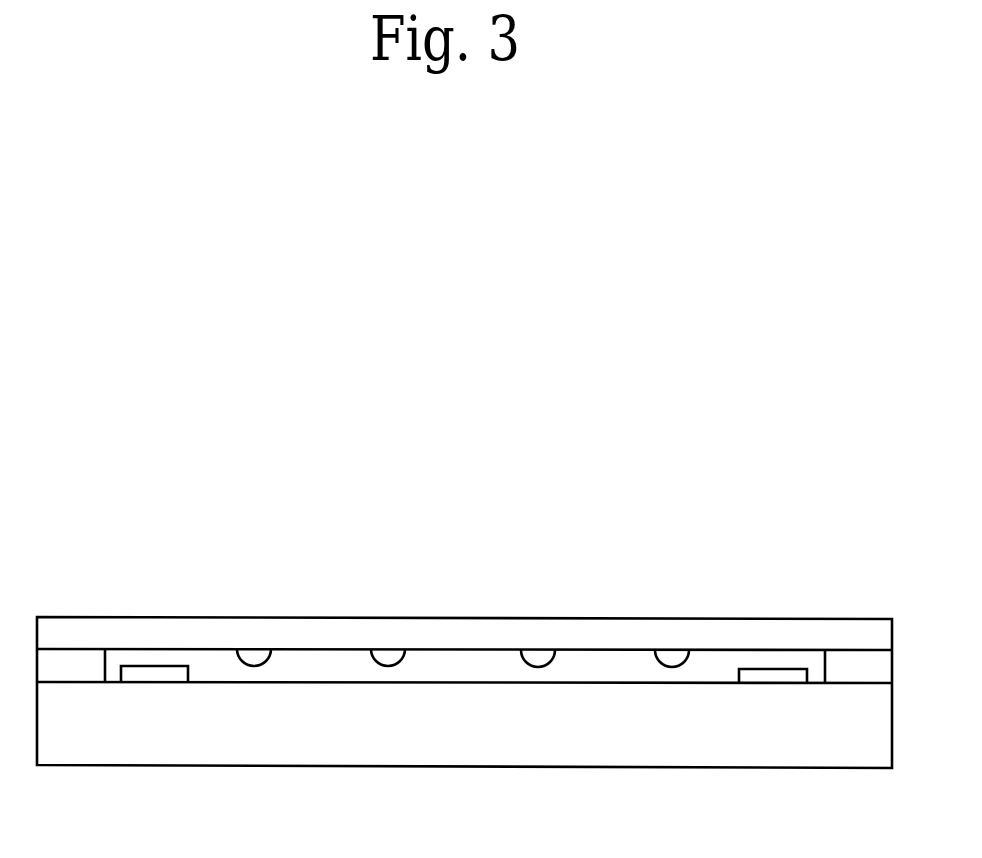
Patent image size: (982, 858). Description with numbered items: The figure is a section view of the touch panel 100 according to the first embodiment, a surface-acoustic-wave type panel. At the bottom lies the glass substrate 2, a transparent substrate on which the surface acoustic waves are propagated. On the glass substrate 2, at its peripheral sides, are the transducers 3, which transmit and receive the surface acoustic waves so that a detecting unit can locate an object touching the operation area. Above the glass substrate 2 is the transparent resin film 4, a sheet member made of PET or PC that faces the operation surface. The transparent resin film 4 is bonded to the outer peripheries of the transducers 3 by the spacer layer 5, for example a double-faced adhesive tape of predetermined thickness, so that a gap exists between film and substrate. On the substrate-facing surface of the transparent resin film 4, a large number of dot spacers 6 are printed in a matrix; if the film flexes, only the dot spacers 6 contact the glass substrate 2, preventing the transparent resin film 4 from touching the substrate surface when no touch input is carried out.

The touch panel 100 is at (473, 407).
The glass substrate 2 is at (670, 751).
The transducers 3 is at (173, 665).
The transparent resin film 4 is at (540, 617).
The spacer layer 5 is at (70, 666).
The dot spacers 6 is at (256, 666).